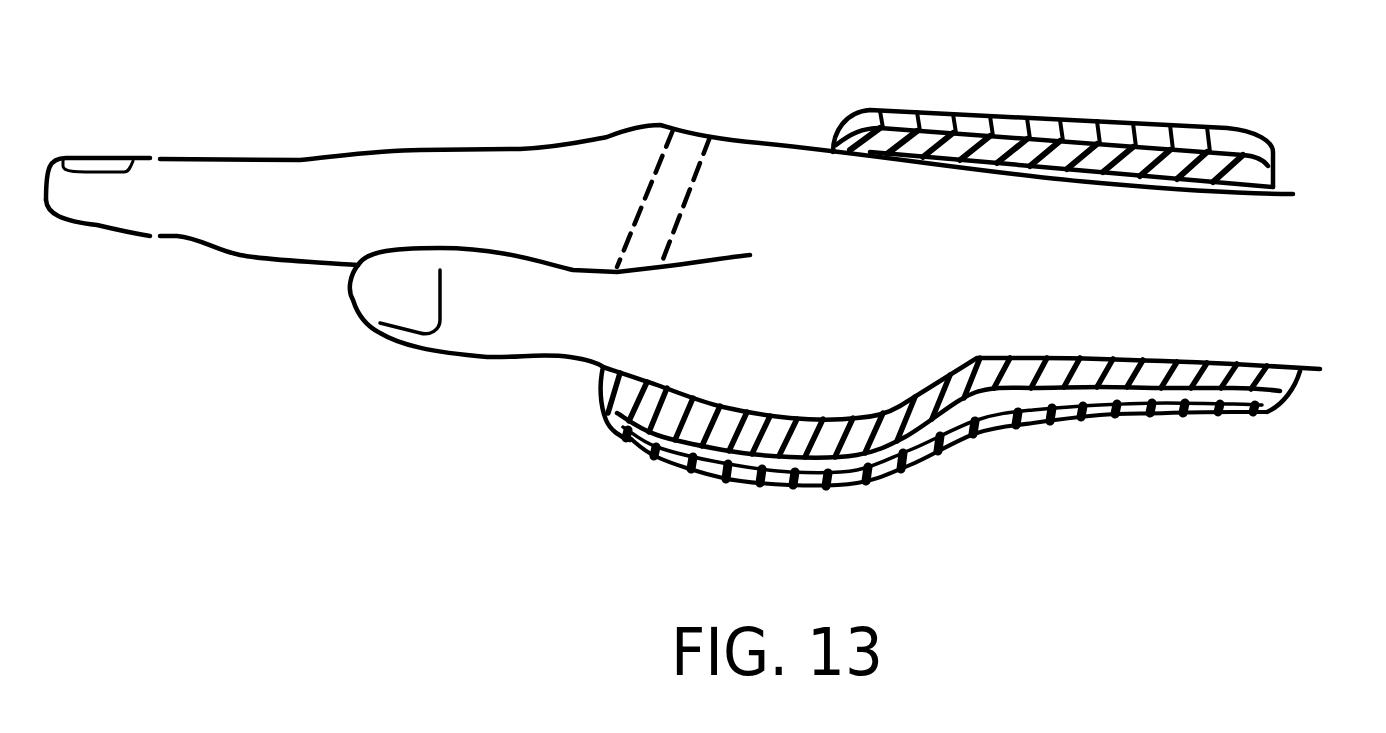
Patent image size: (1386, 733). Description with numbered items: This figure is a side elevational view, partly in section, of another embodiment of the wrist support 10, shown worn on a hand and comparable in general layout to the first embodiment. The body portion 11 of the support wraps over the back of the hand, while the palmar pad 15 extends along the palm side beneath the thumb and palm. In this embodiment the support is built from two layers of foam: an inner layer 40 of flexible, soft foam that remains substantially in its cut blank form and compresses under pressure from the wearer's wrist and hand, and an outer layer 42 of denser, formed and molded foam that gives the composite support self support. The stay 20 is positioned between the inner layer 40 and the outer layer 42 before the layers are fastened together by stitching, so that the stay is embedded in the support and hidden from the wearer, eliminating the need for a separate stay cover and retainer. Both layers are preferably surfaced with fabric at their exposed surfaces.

The wrist support 10 is at (1050, 93).
The body portion 11 is at (903, 108).
The palmar pad 15 is at (903, 470).
The stay 20 is at (798, 465).
The inner layer 40 is at (988, 383).
The outer layer 42 is at (1247, 417).